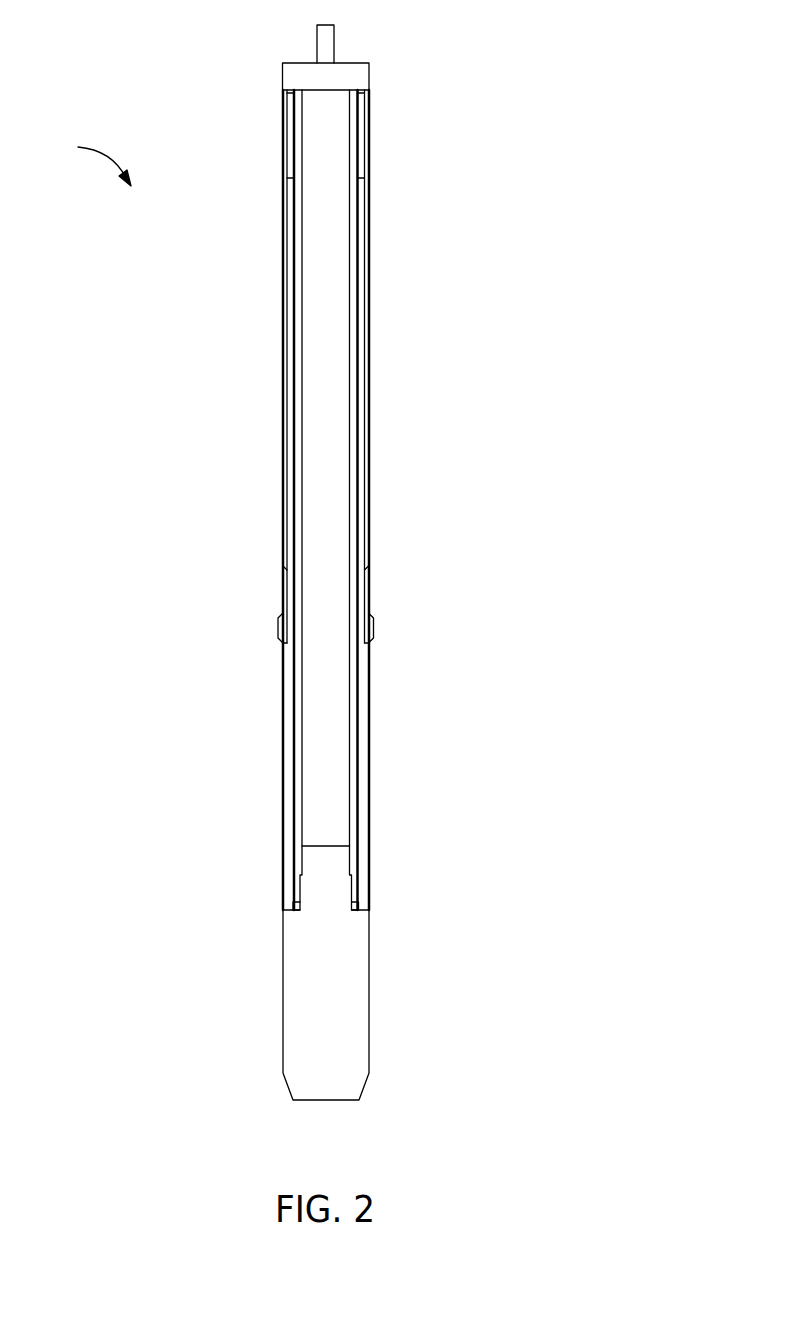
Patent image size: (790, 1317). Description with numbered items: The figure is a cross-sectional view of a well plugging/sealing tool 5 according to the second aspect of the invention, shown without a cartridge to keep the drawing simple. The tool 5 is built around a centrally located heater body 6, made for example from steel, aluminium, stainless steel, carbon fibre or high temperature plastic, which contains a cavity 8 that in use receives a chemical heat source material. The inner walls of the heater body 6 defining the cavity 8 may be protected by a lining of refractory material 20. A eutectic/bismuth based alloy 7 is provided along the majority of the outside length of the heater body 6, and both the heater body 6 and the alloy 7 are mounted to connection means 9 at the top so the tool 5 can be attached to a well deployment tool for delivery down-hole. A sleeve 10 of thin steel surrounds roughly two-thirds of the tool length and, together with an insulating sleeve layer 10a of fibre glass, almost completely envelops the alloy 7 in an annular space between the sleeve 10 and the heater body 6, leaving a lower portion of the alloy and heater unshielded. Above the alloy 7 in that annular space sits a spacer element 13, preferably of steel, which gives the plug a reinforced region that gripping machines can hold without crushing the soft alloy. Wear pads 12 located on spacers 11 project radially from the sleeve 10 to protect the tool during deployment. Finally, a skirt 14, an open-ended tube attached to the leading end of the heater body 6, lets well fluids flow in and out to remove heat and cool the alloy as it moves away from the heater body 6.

The well plugging/sealing tool 5 is at (97, 158).
The connection means 9 is at (335, 42).
The sleeve 10 is at (370, 118).
The insulating sleeve layer 10a is at (368, 155).
The spacer element 13 is at (360, 172).
The heater body 6 is at (352, 305).
The lining of refractory material 20 is at (350, 496).
The eutectic/bismuth based alloy 7 is at (292, 523).
The spacers 11 is at (365, 592).
The wear pads 12 is at (370, 628).
The cavity 8 is at (328, 705).
The skirt 14 is at (370, 967).